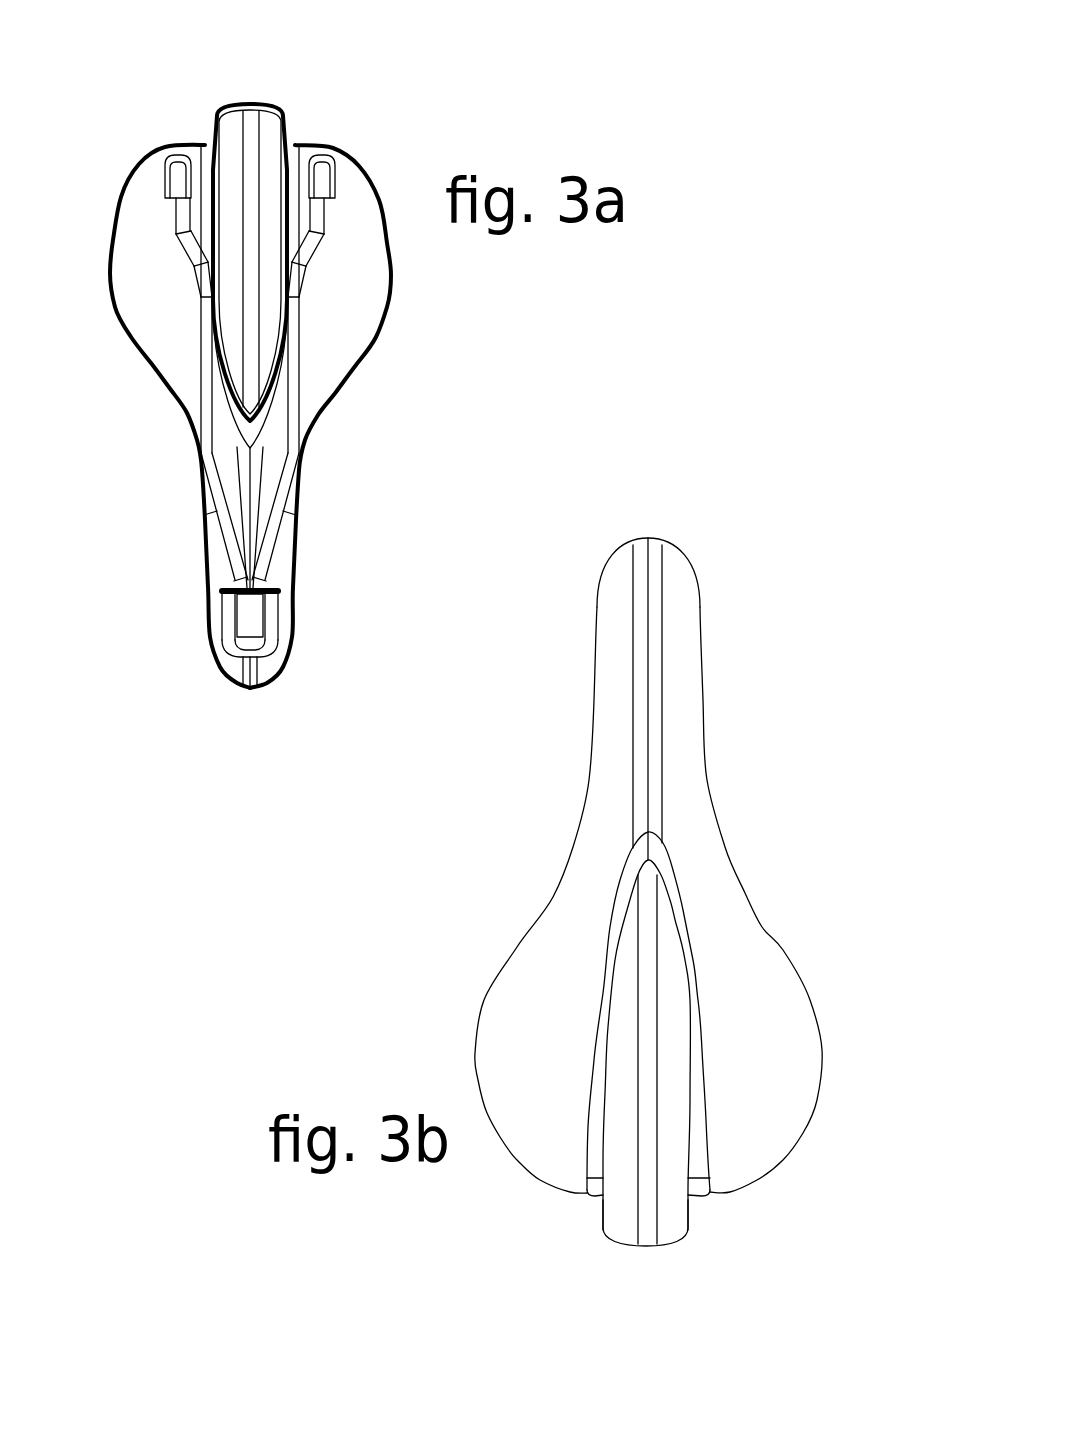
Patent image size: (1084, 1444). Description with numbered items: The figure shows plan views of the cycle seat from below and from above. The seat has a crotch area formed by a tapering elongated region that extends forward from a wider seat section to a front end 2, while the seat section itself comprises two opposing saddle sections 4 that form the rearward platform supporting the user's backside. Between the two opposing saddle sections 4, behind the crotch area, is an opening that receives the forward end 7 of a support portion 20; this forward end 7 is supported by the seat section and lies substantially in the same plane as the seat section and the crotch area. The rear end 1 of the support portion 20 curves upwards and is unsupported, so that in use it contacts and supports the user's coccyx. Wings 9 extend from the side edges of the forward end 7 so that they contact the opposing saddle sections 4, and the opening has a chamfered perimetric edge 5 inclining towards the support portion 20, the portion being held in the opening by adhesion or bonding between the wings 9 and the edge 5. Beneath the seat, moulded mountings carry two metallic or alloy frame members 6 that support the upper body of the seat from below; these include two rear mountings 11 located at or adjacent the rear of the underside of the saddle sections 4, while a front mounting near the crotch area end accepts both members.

In FIG. 3A, the rear end 1 is at (247, 102).
In FIG. 3B, the rear end 1 is at (650, 1247).
In FIG. 3A, the front end 2 is at (250, 666).
In FIG. 3B, the front end 2 is at (648, 546).
In FIG. 3A, the saddle sections 4 is at (250, 416).
In FIG. 3B, the saddle sections 4 is at (648, 900).
In FIG. 3A, the chamfered perimetric edge 5 is at (208, 212).
In FIG. 3B, the chamfered perimetric edge 5 is at (630, 857).
In FIG. 3A, the frame members 6 is at (213, 453).
In FIG. 3A, the forward end 7 is at (250, 385).
In FIG. 3B, the forward end 7 is at (650, 915).
In FIG. 3A, the wings 9 is at (300, 247).
In FIG. 3A, the rear mountings 11 is at (175, 163).
In FIG. 3A, the support portion 20 is at (272, 172).
In FIG. 3B, the support portion 20 is at (620, 1022).